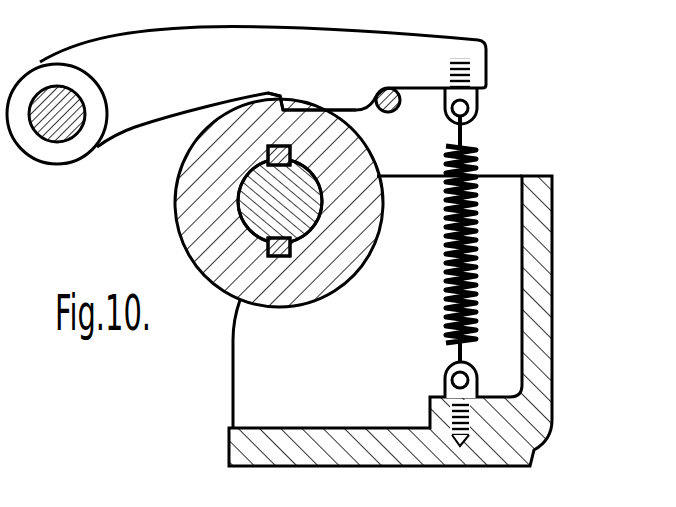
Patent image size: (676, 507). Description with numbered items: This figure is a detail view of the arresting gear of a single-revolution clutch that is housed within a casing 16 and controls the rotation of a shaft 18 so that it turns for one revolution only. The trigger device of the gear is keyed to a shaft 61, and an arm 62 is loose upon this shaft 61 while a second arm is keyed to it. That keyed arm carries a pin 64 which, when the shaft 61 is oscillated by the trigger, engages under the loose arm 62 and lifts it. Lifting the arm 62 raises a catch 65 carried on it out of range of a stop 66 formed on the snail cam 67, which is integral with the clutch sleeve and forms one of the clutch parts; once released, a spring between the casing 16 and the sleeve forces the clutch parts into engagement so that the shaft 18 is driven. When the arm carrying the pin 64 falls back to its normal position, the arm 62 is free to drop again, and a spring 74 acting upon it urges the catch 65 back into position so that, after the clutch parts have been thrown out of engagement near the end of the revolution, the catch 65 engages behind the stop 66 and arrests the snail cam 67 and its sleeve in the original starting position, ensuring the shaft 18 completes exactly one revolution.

The casing 16 is at (530, 319).
The shaft 18 is at (240, 218).
The shaft 61 is at (52, 140).
The arm 62 is at (382, 57).
The pin 64 is at (391, 112).
The catch 65 is at (284, 108).
The stop 66 is at (269, 104).
The snail cam 67 is at (196, 191).
The spring 74 is at (477, 161).